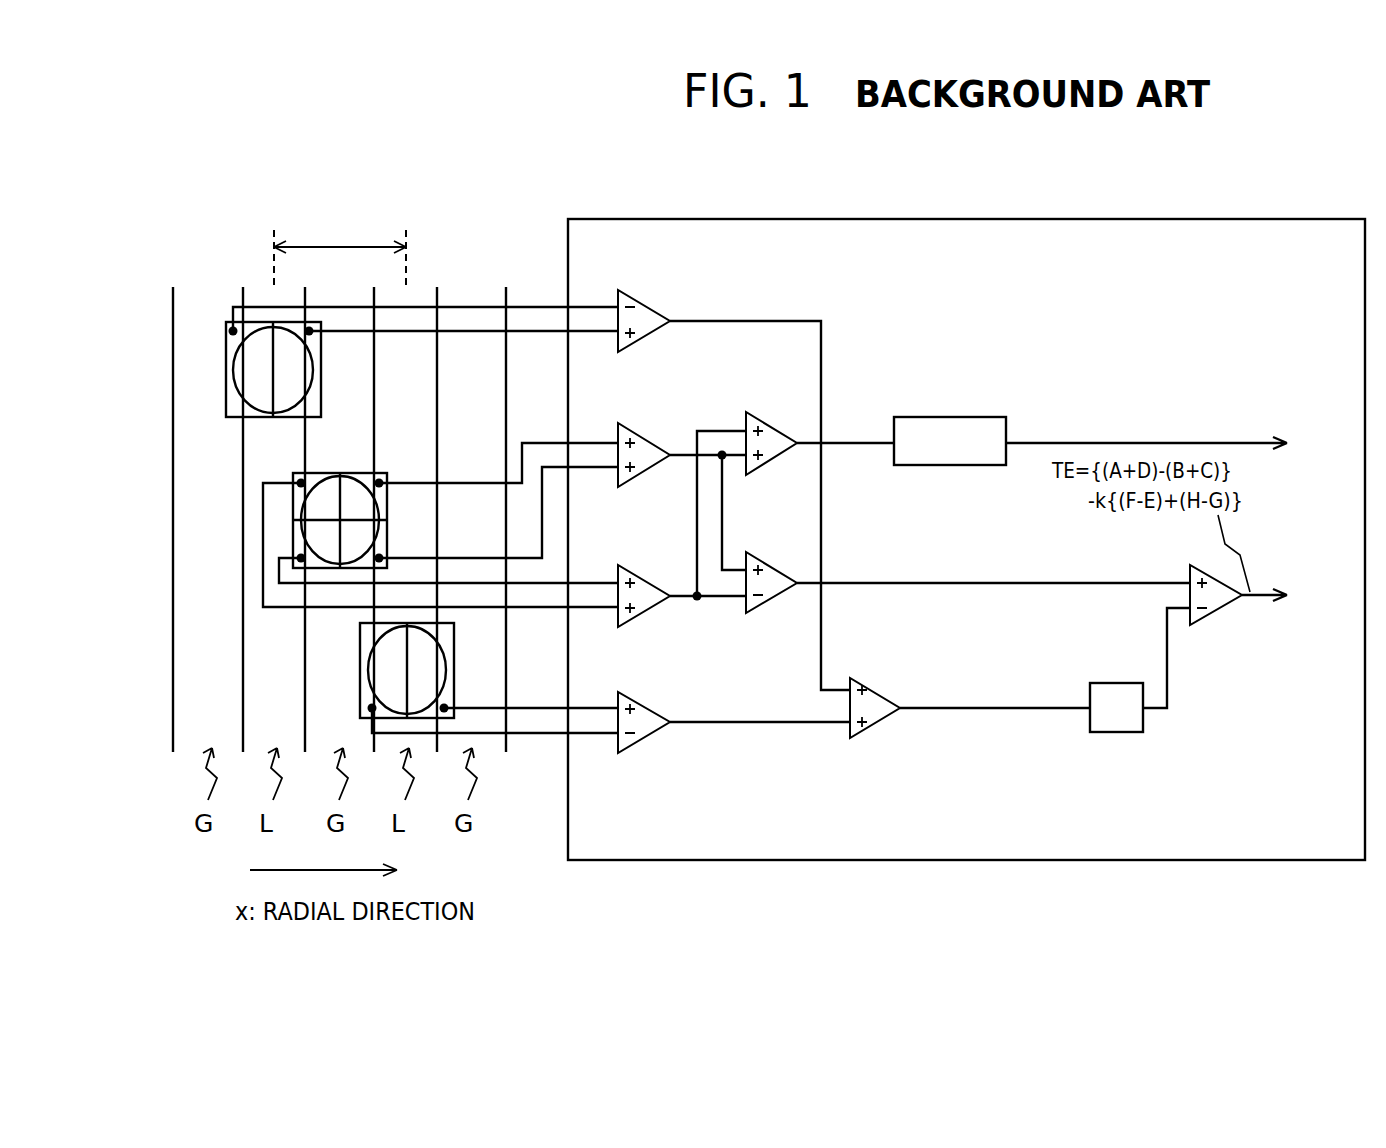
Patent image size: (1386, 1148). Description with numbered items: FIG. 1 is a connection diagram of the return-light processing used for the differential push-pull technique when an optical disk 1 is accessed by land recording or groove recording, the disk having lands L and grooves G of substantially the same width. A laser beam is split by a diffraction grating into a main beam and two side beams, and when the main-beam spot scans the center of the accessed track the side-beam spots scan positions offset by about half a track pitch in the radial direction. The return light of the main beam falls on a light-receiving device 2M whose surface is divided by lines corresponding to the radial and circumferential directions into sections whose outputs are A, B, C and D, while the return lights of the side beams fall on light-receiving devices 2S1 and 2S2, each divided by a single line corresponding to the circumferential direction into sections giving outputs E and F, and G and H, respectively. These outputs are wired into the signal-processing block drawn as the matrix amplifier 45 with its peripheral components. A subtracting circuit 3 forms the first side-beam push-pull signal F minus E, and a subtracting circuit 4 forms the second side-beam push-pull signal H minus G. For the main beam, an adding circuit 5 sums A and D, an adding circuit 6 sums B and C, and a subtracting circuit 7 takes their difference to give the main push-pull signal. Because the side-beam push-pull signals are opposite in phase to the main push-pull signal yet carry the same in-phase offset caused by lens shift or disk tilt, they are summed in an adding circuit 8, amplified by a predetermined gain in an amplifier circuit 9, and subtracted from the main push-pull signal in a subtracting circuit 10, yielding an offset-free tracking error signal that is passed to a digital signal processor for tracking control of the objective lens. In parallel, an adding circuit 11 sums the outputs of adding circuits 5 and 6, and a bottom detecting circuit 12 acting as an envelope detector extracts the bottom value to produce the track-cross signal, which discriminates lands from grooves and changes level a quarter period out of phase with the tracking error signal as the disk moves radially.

The optical disk 1 is at (430, 203).
The light-receiving device 2S1 is at (233, 343).
The light-receiving device 2M is at (313, 478).
The light-receiving device 2S2 is at (443, 647).
The subtracting circuit 3 is at (651, 302).
The subtracting circuit 4 is at (645, 738).
The adding circuit 5 is at (638, 432).
The adding circuit 6 is at (645, 612).
The subtracting circuit 7 is at (770, 600).
The adding circuit 8 is at (875, 725).
The amplifier circuit 9 is at (1128, 648).
The subtracting circuit 10 is at (1215, 617).
The adding circuit 11 is at (770, 420).
The bottom detecting circuit 12 is at (952, 416).
The signal processing circuit 45 is at (953, 218).
The main-beam detector output A is at (367, 478).
The main-beam detector output B is at (297, 502).
The main-beam detector output C is at (297, 548).
The main-beam detector output D is at (380, 547).
The side-beam detector output E is at (233, 402).
The side-beam detector output F is at (310, 405).
The groove G is at (367, 695).
The side-beam detector output H is at (443, 698).